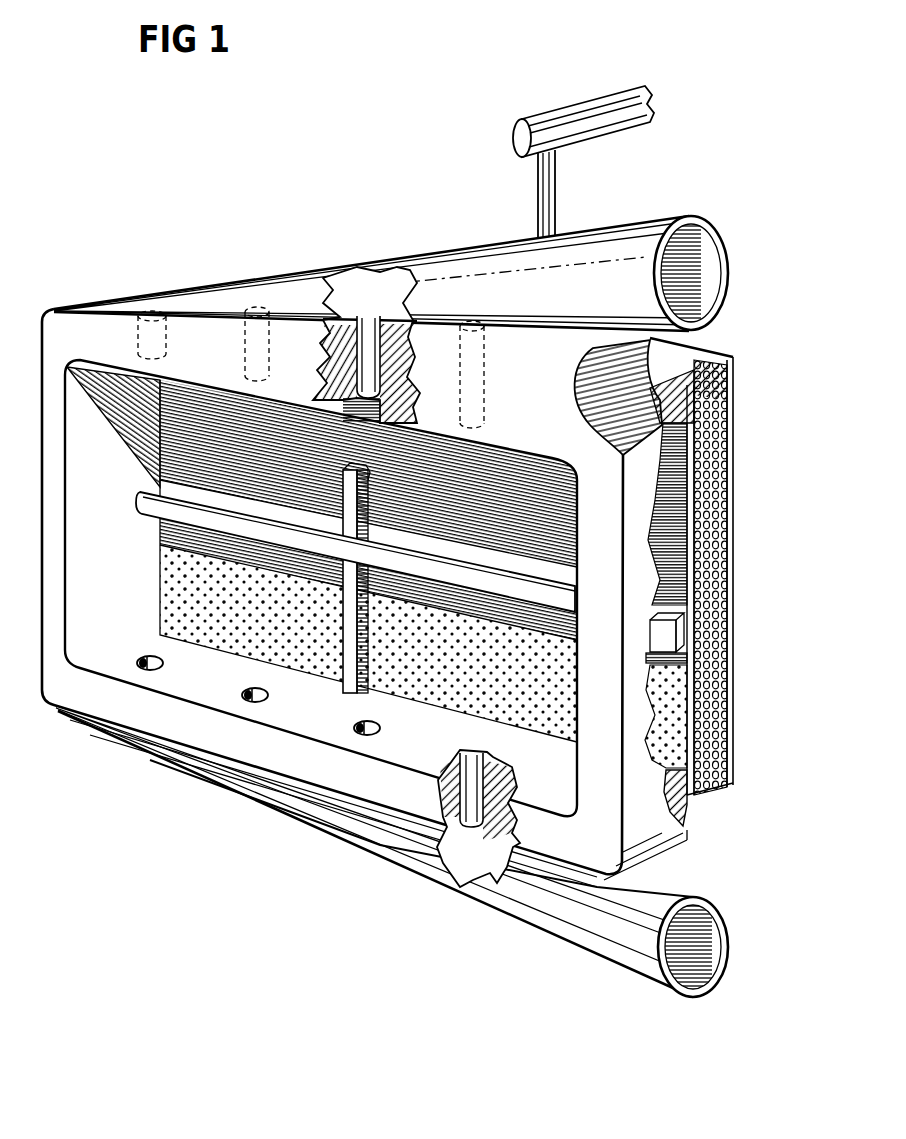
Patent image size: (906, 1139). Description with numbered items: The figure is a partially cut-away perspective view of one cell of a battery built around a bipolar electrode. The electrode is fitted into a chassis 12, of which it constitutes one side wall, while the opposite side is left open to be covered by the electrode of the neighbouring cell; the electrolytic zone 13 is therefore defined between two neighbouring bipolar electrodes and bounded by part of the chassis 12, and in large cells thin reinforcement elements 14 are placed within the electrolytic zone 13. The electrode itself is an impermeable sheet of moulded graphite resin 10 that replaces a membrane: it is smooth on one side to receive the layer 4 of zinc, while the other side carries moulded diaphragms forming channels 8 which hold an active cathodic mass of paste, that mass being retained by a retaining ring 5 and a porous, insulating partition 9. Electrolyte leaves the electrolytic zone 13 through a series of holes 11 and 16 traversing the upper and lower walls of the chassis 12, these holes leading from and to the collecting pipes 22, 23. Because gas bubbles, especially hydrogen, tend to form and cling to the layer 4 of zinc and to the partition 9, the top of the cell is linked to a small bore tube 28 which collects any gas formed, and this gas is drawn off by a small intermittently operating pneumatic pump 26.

The layer of zinc 4 is at (733, 358).
The retaining ring 5 is at (700, 370).
The grooves or channels 8 is at (712, 800).
The porous, insulating partition 9 is at (690, 705).
The sheet of moulded graphite resin 10 is at (733, 795).
The holes 11 is at (465, 754).
The chassis 12 is at (137, 722).
The electrolytic zone 13 is at (135, 612).
The reinforcement elements 14 is at (140, 497).
The holes 16 is at (505, 393).
The collecting pipe 22 is at (628, 953).
The collecting pipe 23 is at (613, 229).
The pneumatic pump 26 is at (652, 101).
The small bore tube 28 is at (538, 199).